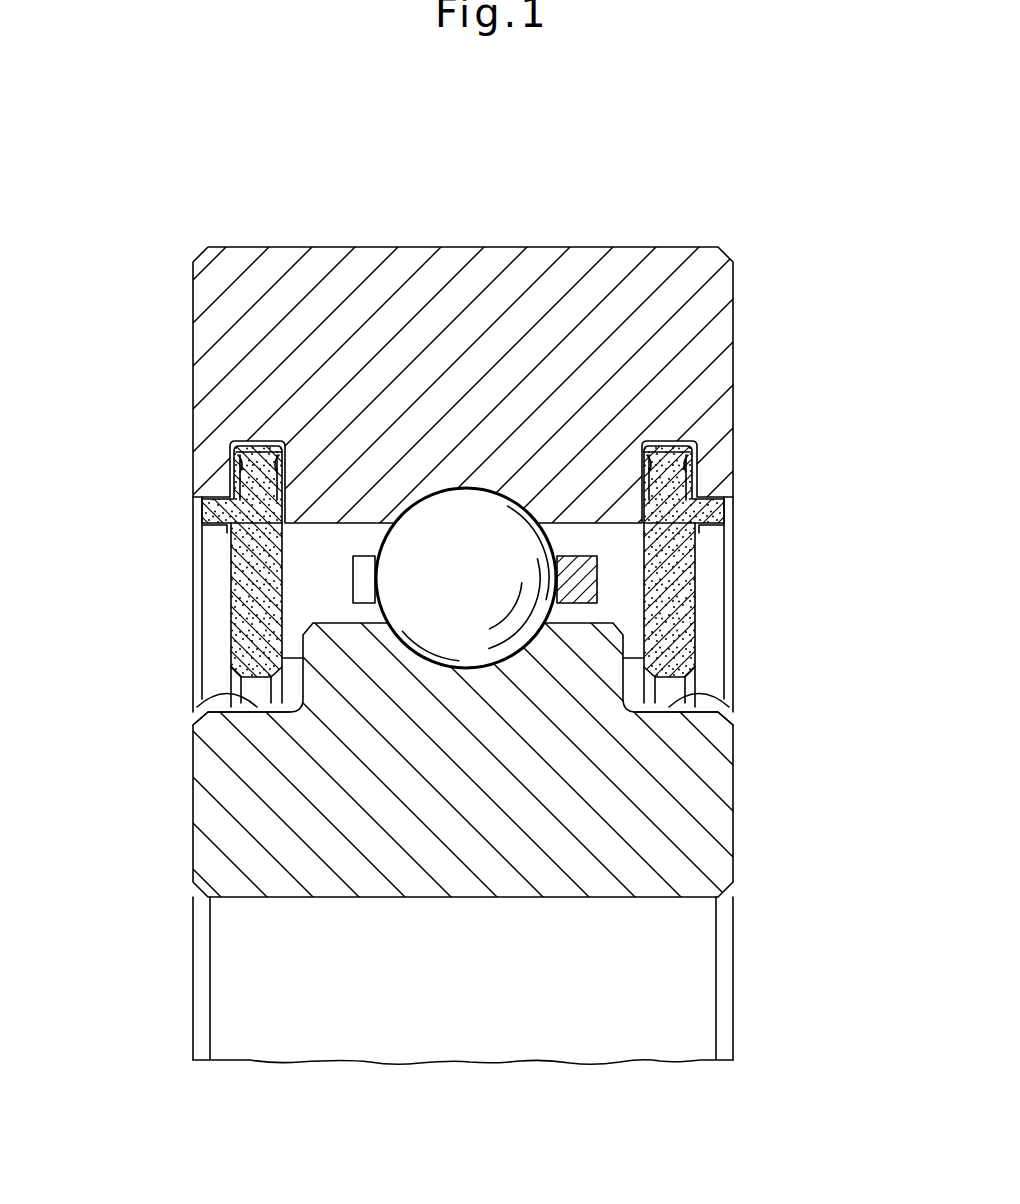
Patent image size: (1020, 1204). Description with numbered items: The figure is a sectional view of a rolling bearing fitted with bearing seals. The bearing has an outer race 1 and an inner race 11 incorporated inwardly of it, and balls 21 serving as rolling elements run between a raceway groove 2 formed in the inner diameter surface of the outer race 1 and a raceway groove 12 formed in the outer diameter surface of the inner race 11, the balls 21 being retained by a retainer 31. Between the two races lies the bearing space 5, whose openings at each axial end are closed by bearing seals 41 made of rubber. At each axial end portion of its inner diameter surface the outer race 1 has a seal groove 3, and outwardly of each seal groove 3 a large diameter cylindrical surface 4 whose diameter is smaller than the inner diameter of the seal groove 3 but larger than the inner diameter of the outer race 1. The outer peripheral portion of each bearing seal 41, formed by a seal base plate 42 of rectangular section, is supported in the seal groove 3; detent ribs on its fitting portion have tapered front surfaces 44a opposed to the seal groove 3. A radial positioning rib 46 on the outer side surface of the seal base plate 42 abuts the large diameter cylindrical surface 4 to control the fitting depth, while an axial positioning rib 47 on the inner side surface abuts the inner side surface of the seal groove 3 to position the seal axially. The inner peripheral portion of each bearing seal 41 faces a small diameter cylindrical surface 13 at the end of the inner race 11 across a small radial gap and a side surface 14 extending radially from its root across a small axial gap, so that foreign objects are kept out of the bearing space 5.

The outer race 1 is at (207, 251).
The raceway groove 2 is at (452, 494).
The balls 21 is at (496, 513).
The retainer 31 is at (578, 565).
The bearing space 5 is at (326, 545).
The seal groove 3 is at (235, 468).
The large diameter cylindrical surface 4 is at (205, 512).
The bearing seal 41 is at (231, 602).
The seal base plate 42 is at (246, 637).
The front surface 44a is at (700, 458).
The radial positioning rib 46 is at (213, 537).
The axial positioning rib 47 is at (206, 573).
The inner race 11 is at (208, 803).
The raceway groove 12 is at (463, 650).
The small diameter cylindrical surface 13 is at (212, 712).
The side surface 14 is at (238, 672).